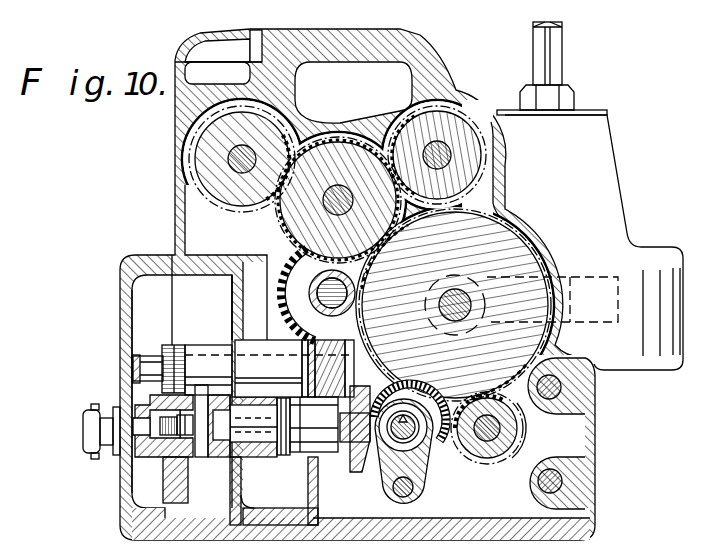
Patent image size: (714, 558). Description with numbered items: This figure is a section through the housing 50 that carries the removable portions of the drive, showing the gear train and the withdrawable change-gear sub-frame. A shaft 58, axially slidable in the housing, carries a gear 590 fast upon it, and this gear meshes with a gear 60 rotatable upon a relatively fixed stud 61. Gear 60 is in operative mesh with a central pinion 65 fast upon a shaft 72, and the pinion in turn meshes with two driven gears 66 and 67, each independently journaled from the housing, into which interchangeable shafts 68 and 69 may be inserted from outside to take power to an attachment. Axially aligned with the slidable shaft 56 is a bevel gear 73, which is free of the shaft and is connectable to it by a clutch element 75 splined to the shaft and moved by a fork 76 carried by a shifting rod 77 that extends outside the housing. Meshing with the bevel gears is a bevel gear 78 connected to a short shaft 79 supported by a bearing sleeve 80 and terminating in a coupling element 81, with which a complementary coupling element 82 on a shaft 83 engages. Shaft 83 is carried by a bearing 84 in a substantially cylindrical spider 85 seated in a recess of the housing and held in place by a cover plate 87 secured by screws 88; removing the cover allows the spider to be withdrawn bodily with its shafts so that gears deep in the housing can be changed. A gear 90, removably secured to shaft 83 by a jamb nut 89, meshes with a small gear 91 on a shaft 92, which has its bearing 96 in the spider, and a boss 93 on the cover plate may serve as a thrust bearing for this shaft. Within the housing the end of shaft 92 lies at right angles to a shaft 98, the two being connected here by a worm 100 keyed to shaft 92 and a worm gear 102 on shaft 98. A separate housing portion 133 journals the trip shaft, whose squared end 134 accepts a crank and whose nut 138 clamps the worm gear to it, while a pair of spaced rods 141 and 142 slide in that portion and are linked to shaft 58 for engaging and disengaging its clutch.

The housing 50 is at (176, 188).
The shaft 56 is at (478, 451).
The shaft 58 is at (500, 430).
The gear 590 is at (495, 458).
The gear 60 is at (556, 345).
The stud 61 is at (455, 290).
The central pinion 65 is at (347, 140).
The driven gear 66 is at (212, 143).
The driven gear 67 is at (441, 148).
The interchangeable shaft 68 is at (250, 172).
The interchangeable shaft 69 is at (451, 157).
The shaft 72 is at (294, 224).
The bevel gear 73 is at (392, 363).
The clutch element 75 is at (406, 410).
The fork 76 is at (427, 477).
The shifting rod 77 is at (408, 492).
The bevel gear 78 is at (362, 473).
The shaft 79 is at (333, 449).
The bearing sleeve 80 is at (299, 452).
The coupling element 81 is at (288, 455).
The coupling element 82 is at (272, 457).
The shaft 83 is at (191, 437).
The bearing 84 is at (217, 457).
The spider 85 is at (243, 310).
The cover plate 87 is at (126, 312).
The screws 88 is at (87, 436).
The jamb nut 89 is at (140, 452).
The gear 90 is at (167, 478).
The gear 91 is at (173, 347).
The shaft 92 is at (148, 356).
The boss 93 is at (133, 380).
The bearing 96 is at (205, 348).
The shaft 98 is at (322, 300).
The worm 100 is at (336, 352).
The worm gear 102 is at (292, 292).
The housing portion 133 is at (623, 205).
The squared end 134 is at (564, 65).
The nut 138 is at (574, 97).
The rod 141 is at (561, 388).
The rod 142 is at (562, 480).